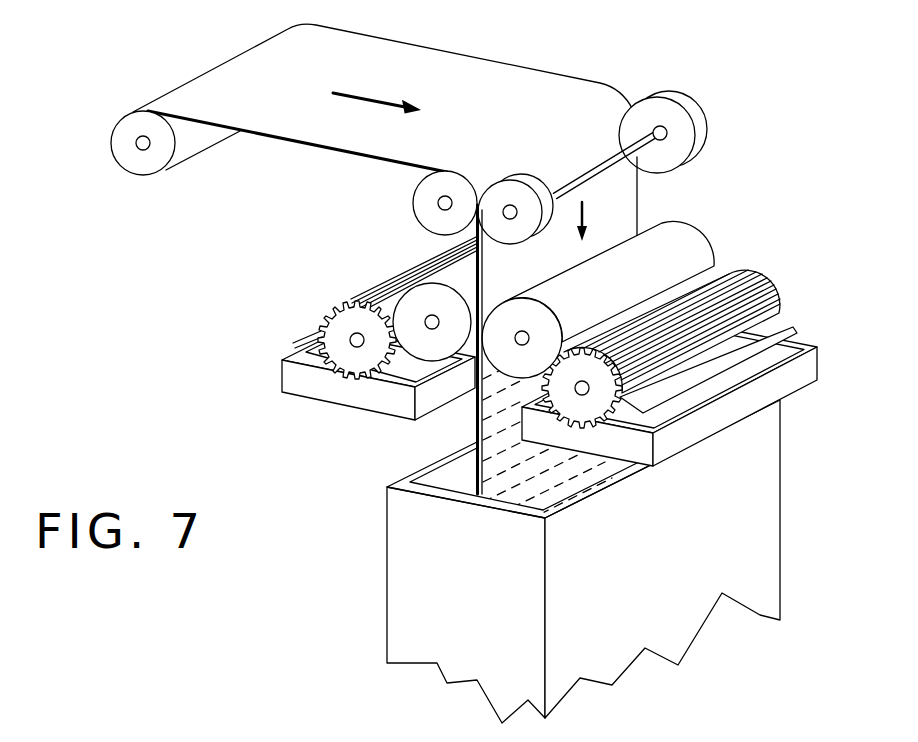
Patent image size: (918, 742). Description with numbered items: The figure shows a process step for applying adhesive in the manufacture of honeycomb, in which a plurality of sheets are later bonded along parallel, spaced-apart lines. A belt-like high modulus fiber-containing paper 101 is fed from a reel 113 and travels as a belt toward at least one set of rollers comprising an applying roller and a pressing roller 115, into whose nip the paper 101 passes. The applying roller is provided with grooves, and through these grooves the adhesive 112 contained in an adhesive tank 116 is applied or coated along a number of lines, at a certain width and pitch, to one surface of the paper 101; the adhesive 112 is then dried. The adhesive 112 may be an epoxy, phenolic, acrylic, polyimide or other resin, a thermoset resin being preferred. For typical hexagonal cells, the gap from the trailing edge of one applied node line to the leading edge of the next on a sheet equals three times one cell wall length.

The high modulus fiber-containing paper 101 is at (313, 146).
The adhesive 112 is at (505, 470).
The reel 113 is at (127, 167).
The pressing roller 115 is at (432, 298).
The adhesive tank 116 is at (312, 398).